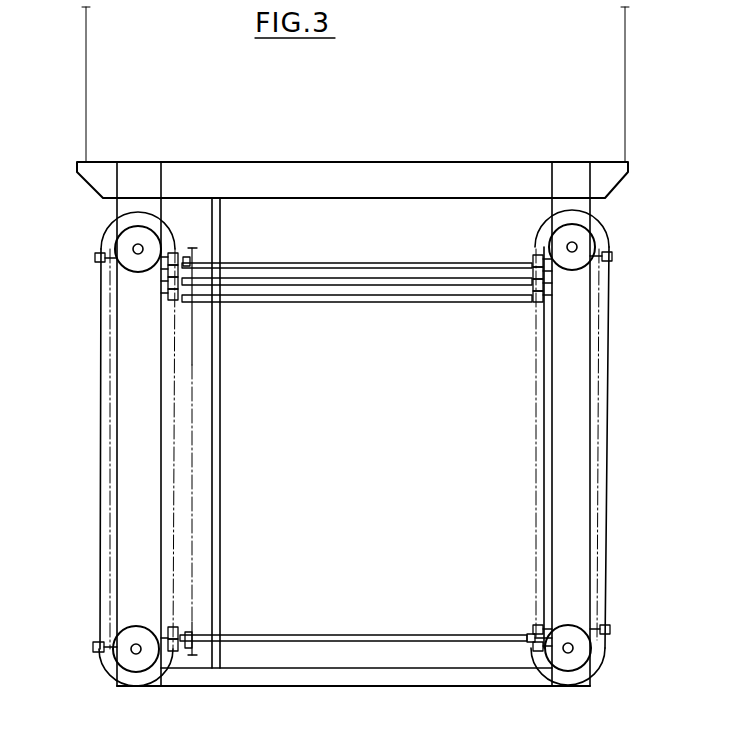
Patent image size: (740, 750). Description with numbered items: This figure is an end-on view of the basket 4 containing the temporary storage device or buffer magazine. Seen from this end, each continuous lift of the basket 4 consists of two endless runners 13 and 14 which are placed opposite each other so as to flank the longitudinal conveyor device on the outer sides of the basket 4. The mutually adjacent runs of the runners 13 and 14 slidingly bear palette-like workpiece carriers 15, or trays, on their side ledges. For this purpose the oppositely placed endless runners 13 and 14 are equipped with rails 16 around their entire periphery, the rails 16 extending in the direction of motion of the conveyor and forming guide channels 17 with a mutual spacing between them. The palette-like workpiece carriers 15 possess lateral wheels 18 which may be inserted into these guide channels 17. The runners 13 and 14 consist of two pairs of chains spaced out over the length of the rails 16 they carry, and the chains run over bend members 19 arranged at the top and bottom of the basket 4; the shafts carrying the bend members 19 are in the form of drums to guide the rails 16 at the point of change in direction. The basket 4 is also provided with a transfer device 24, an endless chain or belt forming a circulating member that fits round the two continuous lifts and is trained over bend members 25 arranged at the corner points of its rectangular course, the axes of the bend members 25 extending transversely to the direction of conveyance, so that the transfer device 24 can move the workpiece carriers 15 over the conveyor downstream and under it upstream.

The basket 4 is at (459, 160).
The endless runner 13 is at (99, 446).
The endless runner 14 is at (603, 487).
The palette-like workpiece carrier 15 is at (378, 637).
The rail 16 is at (96, 644).
The guide channel 17 is at (547, 630).
The lateral wheel 18 is at (535, 637).
The bend member 19 is at (128, 260).
The transfer device 24 is at (192, 403).
The bend member 25 is at (147, 677).